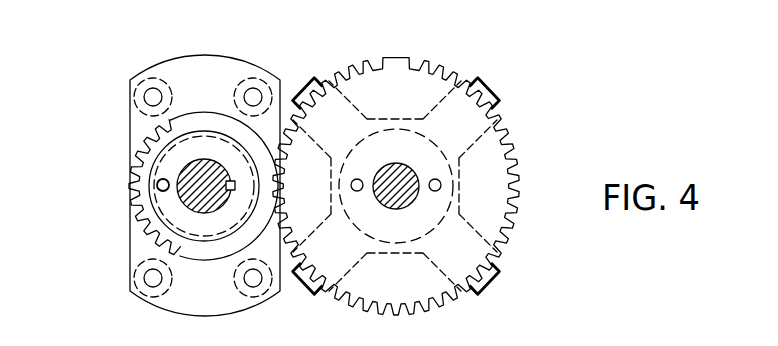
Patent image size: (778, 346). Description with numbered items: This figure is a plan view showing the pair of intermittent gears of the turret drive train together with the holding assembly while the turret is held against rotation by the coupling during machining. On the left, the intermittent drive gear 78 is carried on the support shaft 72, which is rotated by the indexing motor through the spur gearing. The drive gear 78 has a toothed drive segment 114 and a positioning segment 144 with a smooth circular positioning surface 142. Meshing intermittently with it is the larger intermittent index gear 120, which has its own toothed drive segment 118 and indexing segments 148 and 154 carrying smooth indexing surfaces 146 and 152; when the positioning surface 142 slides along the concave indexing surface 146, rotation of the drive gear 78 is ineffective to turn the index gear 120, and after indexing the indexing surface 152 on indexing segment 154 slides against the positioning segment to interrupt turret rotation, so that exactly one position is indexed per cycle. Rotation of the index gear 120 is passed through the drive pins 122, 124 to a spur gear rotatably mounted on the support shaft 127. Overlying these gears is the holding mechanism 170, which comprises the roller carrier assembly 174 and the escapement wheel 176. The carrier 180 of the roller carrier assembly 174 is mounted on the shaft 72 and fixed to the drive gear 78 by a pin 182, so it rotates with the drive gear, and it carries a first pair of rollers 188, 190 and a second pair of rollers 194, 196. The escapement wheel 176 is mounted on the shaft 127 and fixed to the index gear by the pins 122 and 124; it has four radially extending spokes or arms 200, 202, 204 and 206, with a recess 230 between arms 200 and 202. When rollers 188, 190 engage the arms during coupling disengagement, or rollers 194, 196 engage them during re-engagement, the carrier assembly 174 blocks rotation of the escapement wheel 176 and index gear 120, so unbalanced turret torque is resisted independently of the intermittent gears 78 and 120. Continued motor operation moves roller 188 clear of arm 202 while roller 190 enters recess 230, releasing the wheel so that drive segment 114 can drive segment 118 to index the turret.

The support shaft 72 is at (187, 193).
The intermittent drive gear 78 is at (136, 130).
The drive segment 114 is at (140, 137).
The drive segment 118 is at (356, 62).
The intermittent index gear 120 is at (523, 133).
The drive pin 122 is at (350, 186).
The drive pin 124 is at (442, 185).
The support shaft 127 is at (393, 160).
The positioning surface 142 is at (183, 259).
The positioning segment 144 is at (225, 266).
The indexing surface 146 is at (284, 177).
The indexing segment 148 is at (284, 203).
The indexing surface 152 is at (393, 56).
The indexing segment 154 is at (409, 50).
The holding mechanism 170 is at (275, 63).
The roller carrier assembly 174 is at (196, 50).
The escapement wheel 176 is at (494, 72).
The carrier 180 is at (122, 233).
The pin 182 is at (157, 183).
The roller 188 is at (253, 67).
The roller 190 is at (148, 62).
The roller 194 is at (128, 291).
The roller 196 is at (263, 304).
The spoke 200 is at (298, 82).
The spoke 202 is at (300, 295).
The spoke 204 is at (493, 289).
The spoke 206 is at (500, 92).
The recess 230 is at (366, 119).